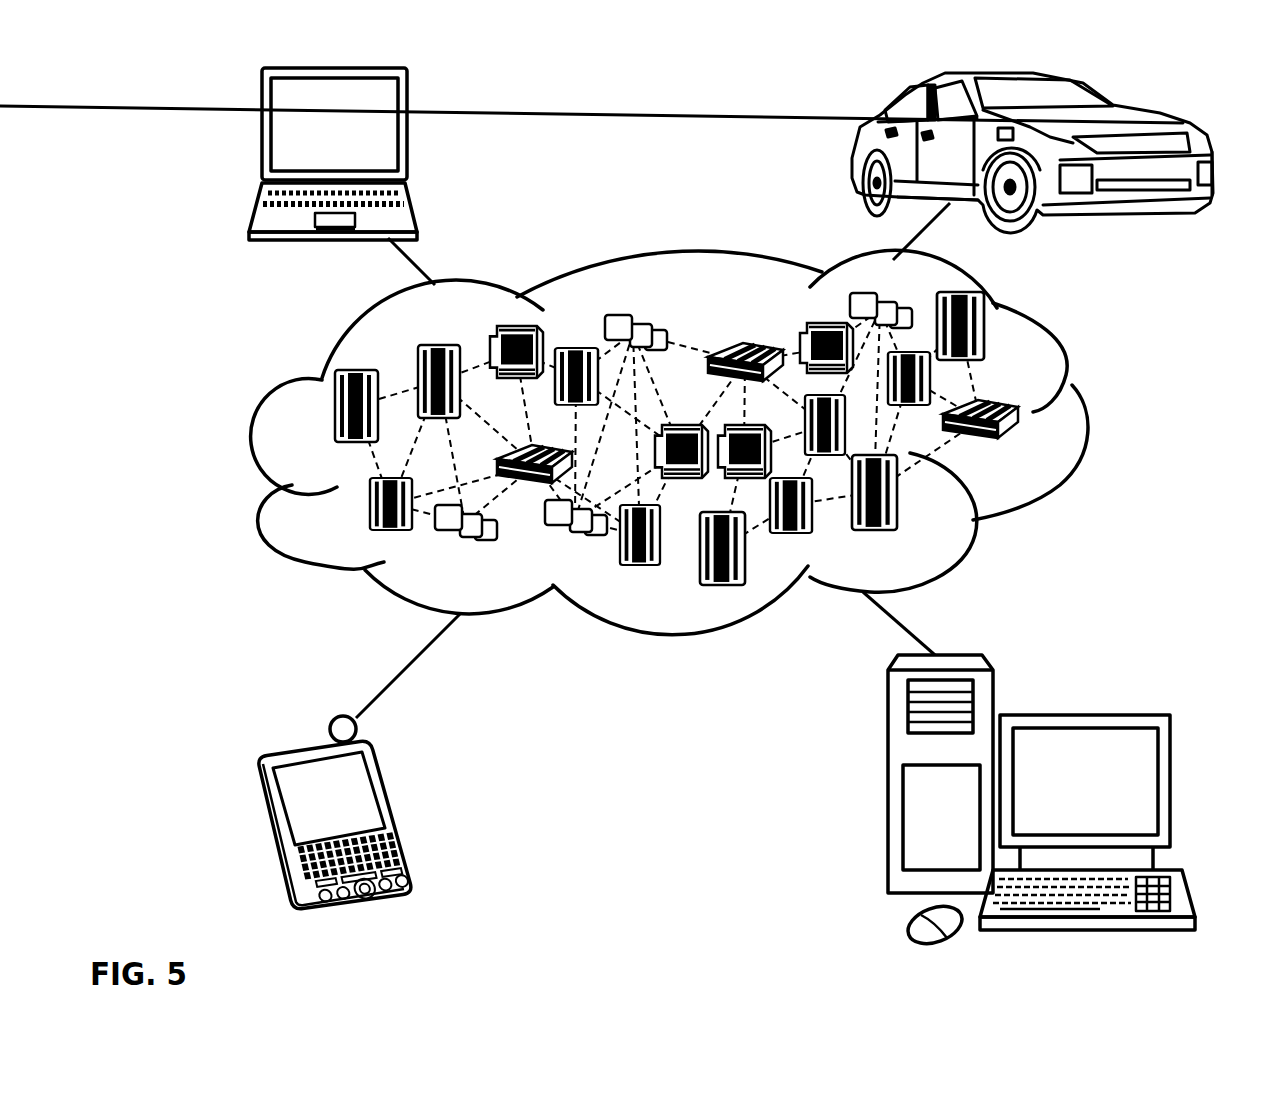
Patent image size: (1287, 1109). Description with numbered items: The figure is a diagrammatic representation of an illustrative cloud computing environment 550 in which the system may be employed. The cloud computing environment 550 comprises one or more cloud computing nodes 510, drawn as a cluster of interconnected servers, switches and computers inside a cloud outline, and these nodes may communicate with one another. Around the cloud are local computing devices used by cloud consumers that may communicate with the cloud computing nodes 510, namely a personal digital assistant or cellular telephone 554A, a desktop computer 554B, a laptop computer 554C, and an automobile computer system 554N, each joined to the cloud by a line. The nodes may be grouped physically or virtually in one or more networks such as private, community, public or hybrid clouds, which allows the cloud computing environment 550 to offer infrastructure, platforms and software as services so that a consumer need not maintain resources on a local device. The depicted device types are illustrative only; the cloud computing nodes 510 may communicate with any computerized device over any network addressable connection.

The cloud computing environment 550 is at (712, 442).
The cloud computing nodes 510 is at (1033, 452).
The personal digital assistant (PDA) or cellular telephone 554A is at (393, 810).
The desktop computer 554B is at (1082, 715).
The laptop computer 554C is at (407, 130).
The automobile computer system 554N is at (853, 152).